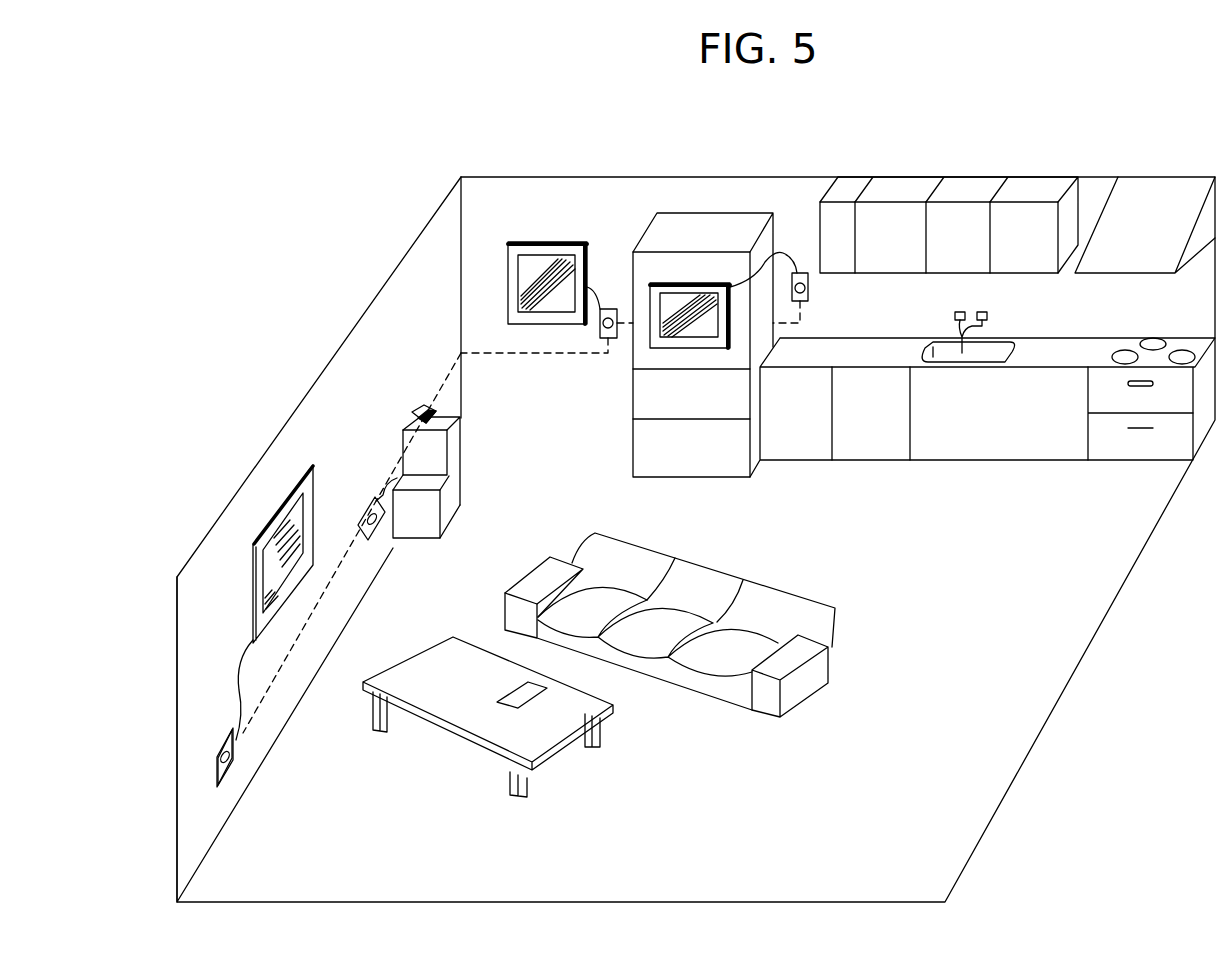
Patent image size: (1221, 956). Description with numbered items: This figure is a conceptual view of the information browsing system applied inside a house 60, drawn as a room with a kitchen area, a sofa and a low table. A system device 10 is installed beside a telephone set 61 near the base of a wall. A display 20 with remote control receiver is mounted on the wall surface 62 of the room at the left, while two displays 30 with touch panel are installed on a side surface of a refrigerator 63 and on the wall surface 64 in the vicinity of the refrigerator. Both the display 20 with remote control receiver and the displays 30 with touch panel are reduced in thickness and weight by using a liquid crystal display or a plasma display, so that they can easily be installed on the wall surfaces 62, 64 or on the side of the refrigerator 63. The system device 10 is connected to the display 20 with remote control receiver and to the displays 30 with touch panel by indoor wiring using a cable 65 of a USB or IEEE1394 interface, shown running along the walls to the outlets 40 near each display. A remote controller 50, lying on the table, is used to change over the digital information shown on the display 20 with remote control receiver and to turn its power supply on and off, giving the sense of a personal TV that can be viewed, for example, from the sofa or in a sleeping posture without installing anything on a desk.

The system device 10 is at (427, 522).
The display with remote control receiver 20 is at (292, 517).
The display with touch panel 30 is at (540, 262).
The outlet (power line adapter) 40 is at (600, 307).
The remote controller 50 is at (503, 708).
The house 60 is at (1171, 104).
The telephone set 61 is at (422, 406).
The wall surface 62 is at (192, 607).
The refrigerator 63 is at (648, 452).
The wall surface 64 is at (478, 195).
The cable 65 is at (260, 710).